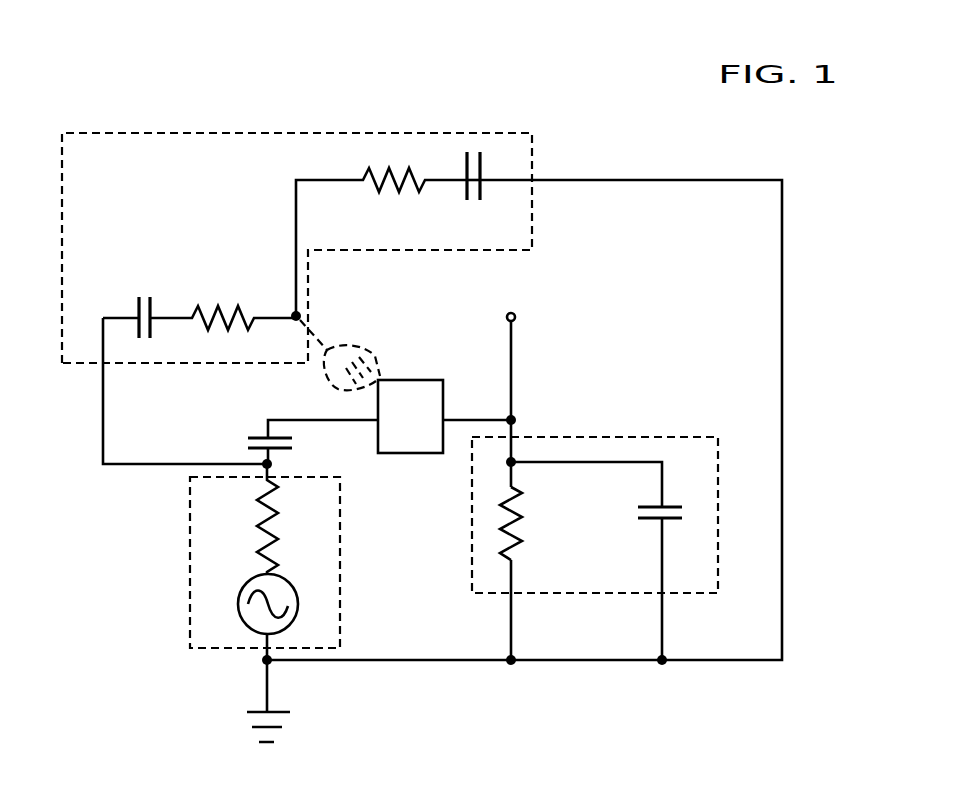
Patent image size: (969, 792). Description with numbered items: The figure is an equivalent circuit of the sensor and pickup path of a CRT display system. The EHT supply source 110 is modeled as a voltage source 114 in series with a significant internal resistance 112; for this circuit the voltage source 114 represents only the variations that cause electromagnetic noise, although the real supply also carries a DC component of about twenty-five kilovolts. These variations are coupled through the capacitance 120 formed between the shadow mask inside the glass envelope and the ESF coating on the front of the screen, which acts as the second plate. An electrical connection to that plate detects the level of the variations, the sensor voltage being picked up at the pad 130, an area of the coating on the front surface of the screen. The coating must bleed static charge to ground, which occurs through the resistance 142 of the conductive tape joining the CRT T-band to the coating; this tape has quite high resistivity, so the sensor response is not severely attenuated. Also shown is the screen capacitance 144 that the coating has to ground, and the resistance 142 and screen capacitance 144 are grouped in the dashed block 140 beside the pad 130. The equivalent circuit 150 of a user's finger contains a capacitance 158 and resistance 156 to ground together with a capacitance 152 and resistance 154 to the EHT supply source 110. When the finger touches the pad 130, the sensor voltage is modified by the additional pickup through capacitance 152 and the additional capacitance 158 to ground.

The EHT supply source 110 is at (188, 560).
The internal resistance 112 is at (263, 522).
The voltage source 114 is at (238, 613).
The capacitance 120 is at (250, 437).
The pad 130 is at (412, 380).
The load network 140 is at (657, 437).
The resistance 142 is at (520, 515).
The screen capacitance 144 is at (652, 520).
The equivalent circuit of the finger of a user 150 is at (180, 208).
The capacitance 152 is at (140, 308).
The resistance 154 is at (222, 313).
The resistance 156 is at (407, 173).
The capacitance 158 is at (482, 153).